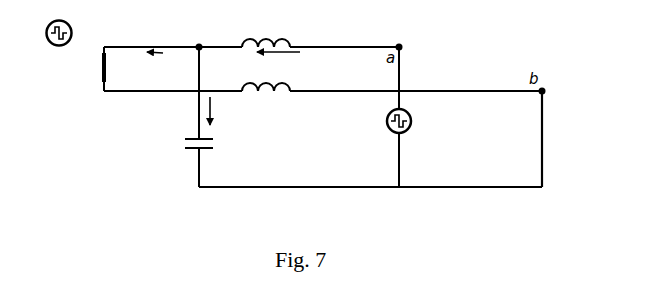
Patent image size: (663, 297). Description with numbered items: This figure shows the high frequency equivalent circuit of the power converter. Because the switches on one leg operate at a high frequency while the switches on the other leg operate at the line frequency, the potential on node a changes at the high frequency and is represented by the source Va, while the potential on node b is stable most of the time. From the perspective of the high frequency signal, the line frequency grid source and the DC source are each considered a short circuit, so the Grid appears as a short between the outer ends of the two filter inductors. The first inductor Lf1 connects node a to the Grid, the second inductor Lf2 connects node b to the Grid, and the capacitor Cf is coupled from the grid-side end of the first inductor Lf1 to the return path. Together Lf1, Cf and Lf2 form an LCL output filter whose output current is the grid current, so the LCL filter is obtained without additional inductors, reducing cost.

The grid Grid is at (173, 69).
The first inductor Lf1 is at (320, 29).
The second inductor Lf2 is at (392, 74).
The capacitor Cf is at (210, 117).
The high frequency source at node a Va is at (386, 117).